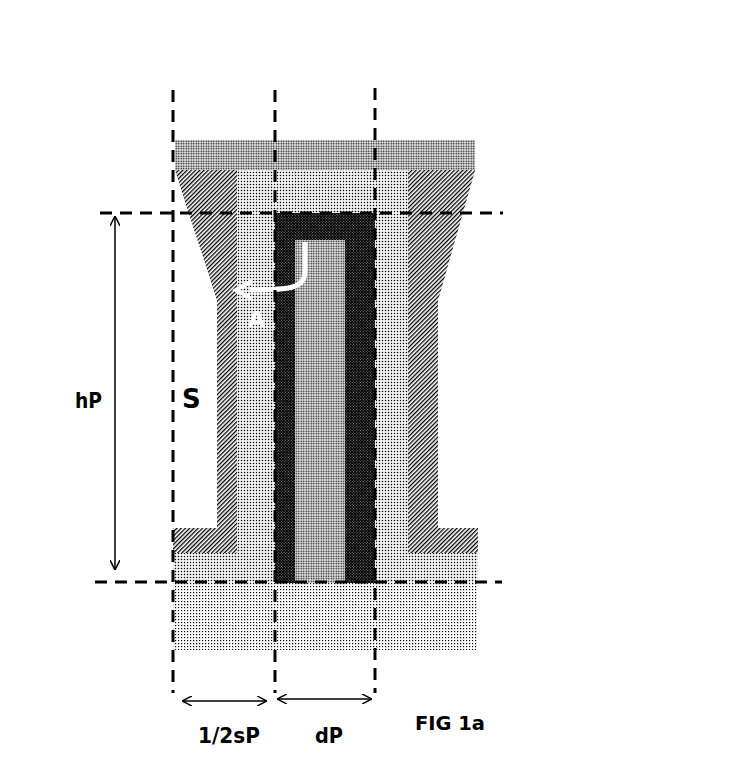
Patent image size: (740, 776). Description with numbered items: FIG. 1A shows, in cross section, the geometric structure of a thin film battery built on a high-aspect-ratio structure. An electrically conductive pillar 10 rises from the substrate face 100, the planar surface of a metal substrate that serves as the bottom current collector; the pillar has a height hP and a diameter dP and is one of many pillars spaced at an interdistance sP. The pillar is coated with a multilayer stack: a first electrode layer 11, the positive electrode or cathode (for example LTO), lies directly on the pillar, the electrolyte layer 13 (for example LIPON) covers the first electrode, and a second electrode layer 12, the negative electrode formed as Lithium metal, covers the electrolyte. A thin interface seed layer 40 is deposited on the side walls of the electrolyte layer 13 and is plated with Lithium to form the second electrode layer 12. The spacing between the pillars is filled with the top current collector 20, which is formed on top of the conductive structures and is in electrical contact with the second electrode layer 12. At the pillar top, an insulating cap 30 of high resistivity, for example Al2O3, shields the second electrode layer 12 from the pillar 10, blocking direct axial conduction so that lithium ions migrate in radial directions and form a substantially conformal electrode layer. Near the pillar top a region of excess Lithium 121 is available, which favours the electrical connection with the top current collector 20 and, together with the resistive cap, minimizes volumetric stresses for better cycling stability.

The conductive pillar 10 is at (315, 472).
The first electrode layer 11 is at (357, 498).
The second electrode layer 12 is at (439, 407).
The excess Lithium 121 is at (438, 228).
The electrolyte layer 13 is at (437, 312).
The top current collector 20 is at (225, 140).
The insulating cap 30 is at (376, 210).
The interface seed layer 40 is at (237, 260).
The substrate face 100 is at (462, 620).